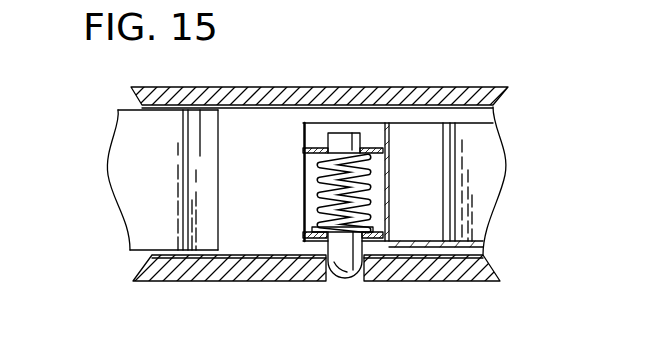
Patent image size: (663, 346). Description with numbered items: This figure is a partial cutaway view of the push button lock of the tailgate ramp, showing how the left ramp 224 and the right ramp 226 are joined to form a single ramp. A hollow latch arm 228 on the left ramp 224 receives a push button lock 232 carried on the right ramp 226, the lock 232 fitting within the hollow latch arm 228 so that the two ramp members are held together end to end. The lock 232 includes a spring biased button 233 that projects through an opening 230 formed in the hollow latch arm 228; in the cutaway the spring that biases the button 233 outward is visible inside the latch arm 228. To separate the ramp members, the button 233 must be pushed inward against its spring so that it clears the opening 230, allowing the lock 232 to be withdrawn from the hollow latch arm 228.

The left ramp 224 is at (140, 124).
The right ramp 226 is at (485, 193).
The hollow latch arm 228 is at (288, 90).
The opening 230 is at (326, 282).
The push button lock 232 is at (345, 137).
The spring biased button 233 is at (346, 264).